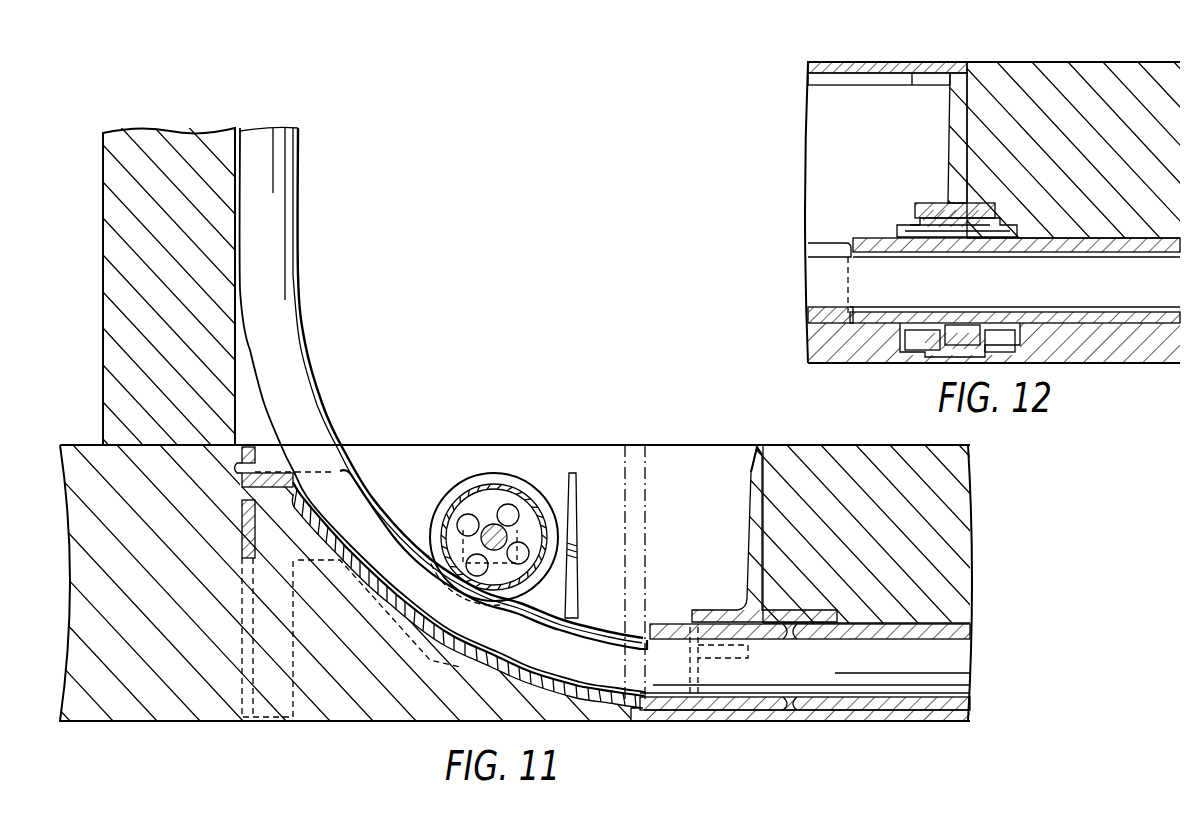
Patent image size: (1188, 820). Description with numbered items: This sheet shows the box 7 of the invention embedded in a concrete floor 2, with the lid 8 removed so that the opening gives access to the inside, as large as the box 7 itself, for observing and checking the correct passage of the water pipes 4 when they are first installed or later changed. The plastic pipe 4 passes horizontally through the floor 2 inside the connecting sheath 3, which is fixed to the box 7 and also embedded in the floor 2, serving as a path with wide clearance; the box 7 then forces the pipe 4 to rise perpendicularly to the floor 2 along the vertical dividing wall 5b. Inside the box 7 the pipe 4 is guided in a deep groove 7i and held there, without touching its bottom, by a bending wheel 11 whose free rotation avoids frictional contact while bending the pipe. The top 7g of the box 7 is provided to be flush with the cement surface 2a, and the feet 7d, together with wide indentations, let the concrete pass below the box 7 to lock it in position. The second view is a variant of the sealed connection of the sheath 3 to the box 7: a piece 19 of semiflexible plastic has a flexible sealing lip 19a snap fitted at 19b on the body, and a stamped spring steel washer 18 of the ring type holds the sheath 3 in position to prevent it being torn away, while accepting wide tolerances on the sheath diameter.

In FIG. 11, the floor 2 is at (858, 458).
In FIG. 12, the floor 2 is at (1030, 75).
In FIG. 11, the housing top surface 2a is at (826, 452).
In FIG. 11, the connecting sheath 3 is at (963, 628).
In FIG. 12, the connecting sheath 3 is at (1065, 318).
In FIG. 11, the water pipe 4 is at (292, 268).
In FIG. 12, the water pipe 4 is at (1133, 289).
In FIG. 11, the vertical dividing wall 5b is at (108, 170).
In FIG. 11, the box 7 is at (757, 490).
In FIG. 12, the box 7 is at (960, 120).
In FIG. 11, the feet 7d is at (268, 726).
In FIG. 11, the top of the box 7g is at (757, 447).
In FIG. 11, the deep grooves 7i is at (603, 625).
In FIG. 12, the deep grooves 7i is at (830, 248).
In FIG. 12, the lid 8 is at (873, 72).
In FIG. 11, the bending wheels 11 is at (458, 508).
In FIG. 12, the spring steel washer 18 is at (925, 240).
In FIG. 12, the piece 19 is at (990, 335).
In FIG. 12, the flexible sealing lip 19a is at (935, 330).
In FIG. 12, the snap fitting 19b is at (975, 340).